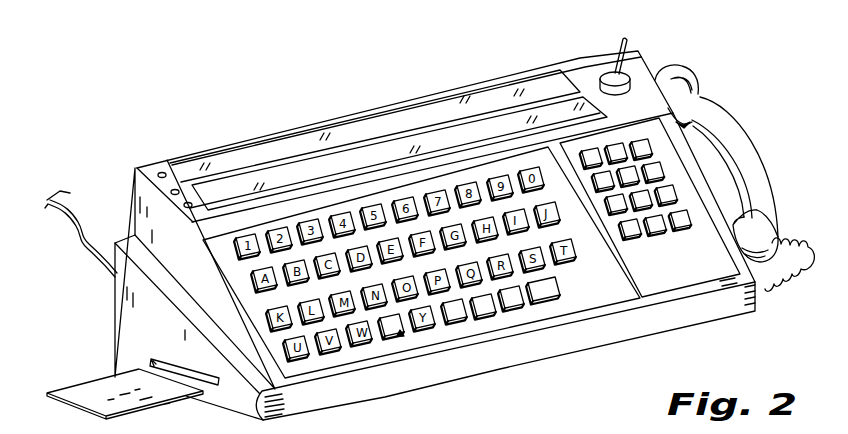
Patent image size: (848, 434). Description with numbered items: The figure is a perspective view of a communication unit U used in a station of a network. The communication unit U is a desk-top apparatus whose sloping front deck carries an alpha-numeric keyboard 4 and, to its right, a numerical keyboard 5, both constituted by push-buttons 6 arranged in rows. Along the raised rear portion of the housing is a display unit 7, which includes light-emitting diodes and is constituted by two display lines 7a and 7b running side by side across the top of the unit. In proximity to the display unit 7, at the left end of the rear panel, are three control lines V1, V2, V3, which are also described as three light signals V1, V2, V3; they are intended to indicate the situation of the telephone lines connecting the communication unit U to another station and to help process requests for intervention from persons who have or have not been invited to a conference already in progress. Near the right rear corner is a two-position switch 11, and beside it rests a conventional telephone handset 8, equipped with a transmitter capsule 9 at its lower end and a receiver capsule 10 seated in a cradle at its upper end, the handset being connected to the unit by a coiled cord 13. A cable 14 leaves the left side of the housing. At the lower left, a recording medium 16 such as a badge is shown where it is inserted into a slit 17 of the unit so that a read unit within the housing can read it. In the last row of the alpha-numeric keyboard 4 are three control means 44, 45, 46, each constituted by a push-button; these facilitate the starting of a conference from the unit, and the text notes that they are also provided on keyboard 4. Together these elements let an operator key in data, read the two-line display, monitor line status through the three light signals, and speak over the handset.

The alpha-numeric keyboard 4 is at (400, 333).
The numerical keyboard 5 is at (637, 255).
The push-buttons 6 is at (462, 323).
The display unit 7 is at (280, 153).
The display line 7a is at (407, 120).
The display line 7b is at (462, 137).
The telephone handset 8 is at (753, 128).
The transmitter capsule 9 is at (774, 236).
The receiver capsule 10 is at (673, 77).
The two-position switch 11 is at (623, 40).
The handset cord 13 is at (767, 295).
The connection cable 14 is at (100, 250).
The recording medium 16 is at (93, 397).
The slit 17 is at (152, 362).
The control means 44 is at (497, 313).
The control means 45 is at (523, 307).
The control means 46 is at (557, 300).
The communication unit U is at (350, 112).
The control line / light signal V1 is at (160, 172).
The control line / light signal V2 is at (172, 190).
The control line / light signal V3 is at (188, 202).